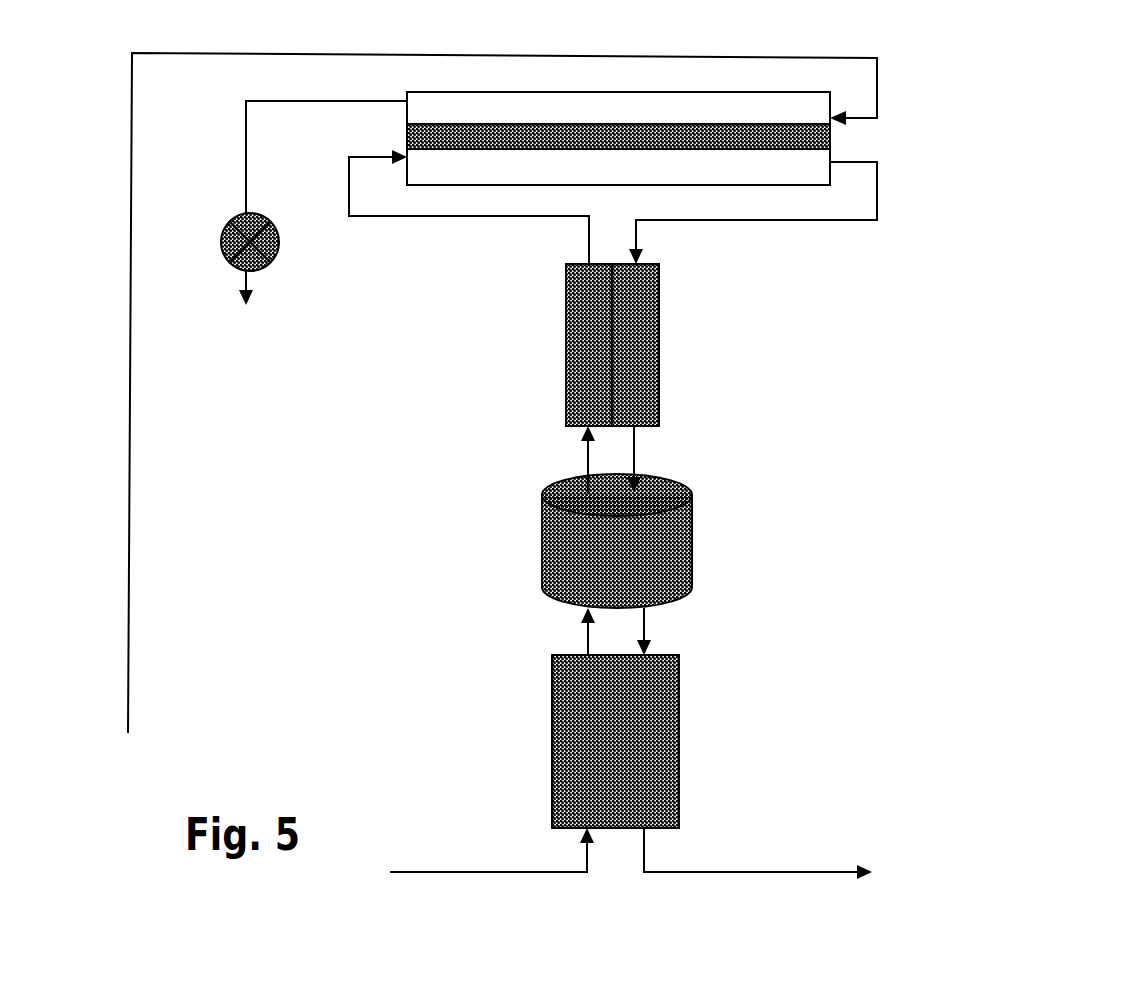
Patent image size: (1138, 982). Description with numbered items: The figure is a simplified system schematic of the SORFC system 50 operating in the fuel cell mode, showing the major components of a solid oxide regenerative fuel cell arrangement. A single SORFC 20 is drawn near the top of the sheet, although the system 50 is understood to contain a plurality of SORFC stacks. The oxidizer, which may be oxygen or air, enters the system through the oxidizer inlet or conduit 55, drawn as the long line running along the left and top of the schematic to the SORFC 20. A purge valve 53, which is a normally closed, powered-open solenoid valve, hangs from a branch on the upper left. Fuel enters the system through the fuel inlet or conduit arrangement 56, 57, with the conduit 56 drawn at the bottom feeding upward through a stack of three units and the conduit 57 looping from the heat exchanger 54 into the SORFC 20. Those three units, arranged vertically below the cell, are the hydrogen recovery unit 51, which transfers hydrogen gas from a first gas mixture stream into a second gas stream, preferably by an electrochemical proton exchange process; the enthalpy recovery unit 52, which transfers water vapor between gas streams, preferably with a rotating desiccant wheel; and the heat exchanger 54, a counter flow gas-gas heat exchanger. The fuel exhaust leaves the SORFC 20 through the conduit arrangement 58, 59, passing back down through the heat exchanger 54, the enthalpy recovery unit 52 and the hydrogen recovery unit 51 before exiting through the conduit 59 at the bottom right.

The SORFC 20 is at (798, 137).
The SORFC system 50 is at (617, 466).
The hydrogen recovery unit 51 is at (655, 733).
The enthalpy recovery unit 52 is at (669, 538).
The purge valve 53 is at (279, 236).
The heat exchanger 54 is at (646, 332).
The oxidizer inlet or conduit 55 is at (130, 498).
The fuel inlet or conduit arrangement 56 is at (483, 872).
The fuel inlet or conduit arrangement 57 is at (430, 216).
The fuel exhaust conduit arrangement 58 is at (877, 196).
The fuel exhaust conduit arrangement 59 is at (768, 872).